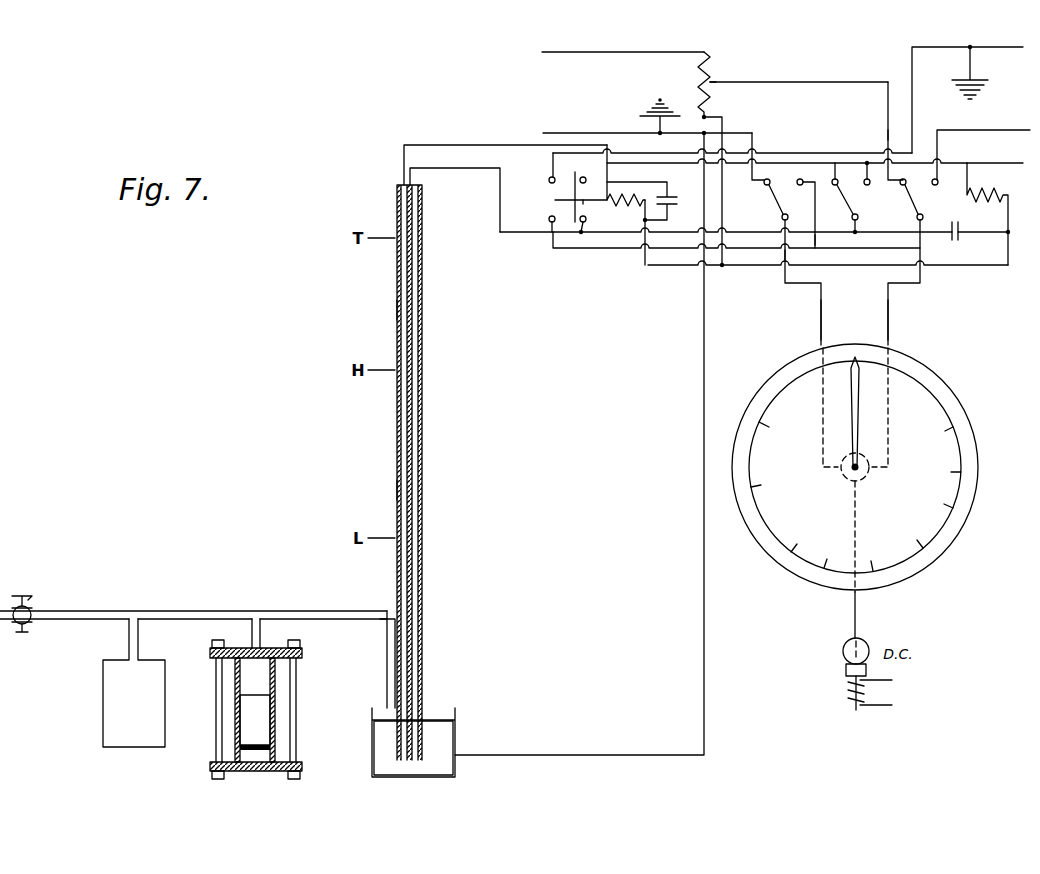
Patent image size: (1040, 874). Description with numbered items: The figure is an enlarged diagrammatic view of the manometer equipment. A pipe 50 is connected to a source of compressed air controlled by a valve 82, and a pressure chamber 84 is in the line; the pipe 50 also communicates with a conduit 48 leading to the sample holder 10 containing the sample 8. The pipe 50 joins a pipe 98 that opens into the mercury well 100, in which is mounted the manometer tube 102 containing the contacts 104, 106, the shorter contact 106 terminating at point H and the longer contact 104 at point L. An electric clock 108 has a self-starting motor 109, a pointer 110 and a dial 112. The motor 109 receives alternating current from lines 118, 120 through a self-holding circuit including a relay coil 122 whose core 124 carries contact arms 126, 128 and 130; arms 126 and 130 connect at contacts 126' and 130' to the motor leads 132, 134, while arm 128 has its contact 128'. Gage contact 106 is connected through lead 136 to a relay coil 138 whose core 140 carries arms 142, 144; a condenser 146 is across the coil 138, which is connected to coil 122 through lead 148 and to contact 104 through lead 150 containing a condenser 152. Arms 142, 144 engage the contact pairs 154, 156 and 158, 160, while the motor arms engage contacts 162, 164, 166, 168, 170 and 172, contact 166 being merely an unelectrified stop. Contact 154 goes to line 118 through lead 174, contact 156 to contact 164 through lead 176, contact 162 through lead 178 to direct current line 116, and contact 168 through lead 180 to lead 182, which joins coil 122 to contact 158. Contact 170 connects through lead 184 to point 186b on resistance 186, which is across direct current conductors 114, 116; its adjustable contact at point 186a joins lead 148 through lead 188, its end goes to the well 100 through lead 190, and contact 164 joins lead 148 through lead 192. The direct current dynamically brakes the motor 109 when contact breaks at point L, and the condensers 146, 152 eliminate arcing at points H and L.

The compacted sample 8 is at (272, 730).
The sample holder press 10 is at (235, 712).
The gas conduit to sample holder 48 is at (262, 633).
The pipe 50 is at (178, 611).
The valve 82 is at (28, 610).
The pressure chamber 84 is at (103, 703).
The pipe 98 is at (387, 668).
The well 100 is at (458, 727).
The manometer tube 102 is at (423, 437).
The contact 104 is at (397, 488).
The contact 106 is at (397, 300).
The electric clock 108 is at (958, 375).
The self-starting motor 109 is at (840, 475).
The pointer 110 is at (851, 400).
The dial 112 is at (797, 578).
The power supply line 114 is at (584, 52).
The power supply line 116 is at (556, 133).
The alternating current supply line 118 is at (914, 47).
The alternating current supply line 120 is at (975, 135).
The relay coil 122 is at (975, 190).
The core 124 is at (864, 209).
The contact arm 126 is at (755, 199).
The contact 126' is at (773, 275).
The contact arm 128 is at (822, 213).
The contact 128' is at (834, 245).
The contact arm 130 is at (932, 202).
The contact 130' is at (898, 282).
The lead 132 is at (819, 327).
The lead 134 is at (890, 327).
The lead 136 is at (460, 145).
The relay coil 138 is at (620, 185).
The core 140 is at (585, 236).
The contact arm 142 is at (555, 200).
The contact arm 144 is at (572, 232).
The condenser 146 is at (652, 265).
The lead 148 is at (656, 265).
The lead 150 is at (500, 203).
The condenser 152 is at (958, 236).
The contact 154 is at (549, 180).
The contact 156 is at (549, 221).
The contact 158 is at (585, 177).
The contact 160 is at (583, 250).
The contact 162 is at (768, 178).
The contact 164 is at (835, 160).
The contact 166 is at (867, 163).
The contact 168 is at (904, 178).
The contact 170 is at (937, 178).
The contact 172 is at (975, 163).
The lead 174 is at (760, 153).
The lead 176 is at (686, 248).
The lead 178 is at (766, 82).
The lead 180 is at (890, 130).
The lead 182 is at (866, 160).
The lead 184 is at (800, 82).
The resistance 186 is at (700, 72).
The adjustable contact point 186a is at (698, 112).
The point on resistance 186b is at (710, 82).
The lead 188 is at (718, 182).
The lead 190 is at (704, 466).
The lead 192 is at (783, 255).